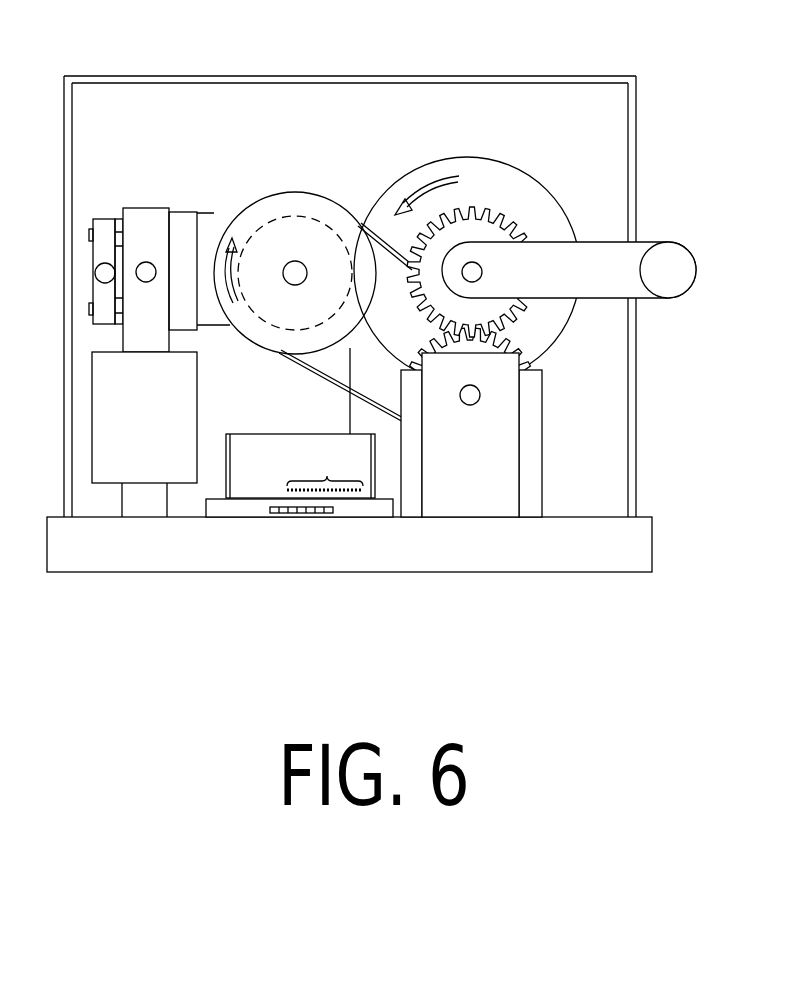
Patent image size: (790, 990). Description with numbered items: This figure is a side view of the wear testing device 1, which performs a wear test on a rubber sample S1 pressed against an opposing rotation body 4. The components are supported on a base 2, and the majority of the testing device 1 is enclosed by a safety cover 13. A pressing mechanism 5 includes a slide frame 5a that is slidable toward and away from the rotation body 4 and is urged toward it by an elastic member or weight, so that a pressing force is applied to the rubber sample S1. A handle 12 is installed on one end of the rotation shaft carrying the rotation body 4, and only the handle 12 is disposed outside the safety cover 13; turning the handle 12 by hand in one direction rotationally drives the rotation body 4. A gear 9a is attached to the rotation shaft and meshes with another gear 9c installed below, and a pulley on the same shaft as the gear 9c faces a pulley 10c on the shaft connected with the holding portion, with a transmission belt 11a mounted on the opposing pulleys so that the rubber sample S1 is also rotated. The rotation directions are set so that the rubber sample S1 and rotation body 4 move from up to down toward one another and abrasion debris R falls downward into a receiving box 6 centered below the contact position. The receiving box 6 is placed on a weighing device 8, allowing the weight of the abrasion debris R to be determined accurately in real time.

The wear testing device 1 is at (350, 258).
The base 2 is at (358, 552).
The rotation body 4 is at (478, 165).
The pressing mechanism 5 is at (160, 201).
The slide frame 5a is at (213, 222).
The receiving box 6 is at (257, 447).
The weighing device 8 is at (253, 509).
The gear 9a is at (487, 213).
The gear 9c is at (528, 373).
The pulley 10c is at (285, 200).
The transmission belt 11a is at (370, 232).
The handle 12 is at (608, 256).
The safety cover 13 is at (333, 82).
The rubber sample S1 is at (305, 228).
The abrasion debris R is at (325, 464).